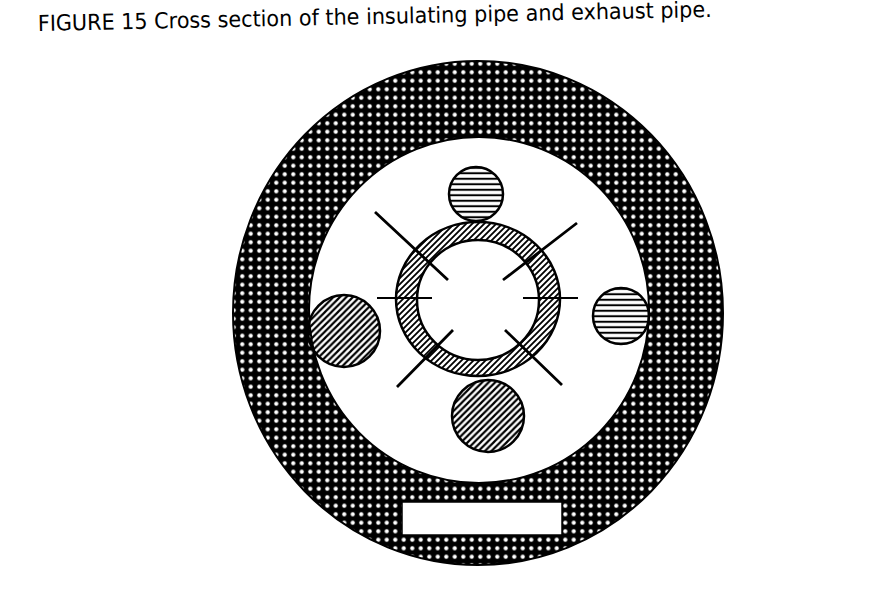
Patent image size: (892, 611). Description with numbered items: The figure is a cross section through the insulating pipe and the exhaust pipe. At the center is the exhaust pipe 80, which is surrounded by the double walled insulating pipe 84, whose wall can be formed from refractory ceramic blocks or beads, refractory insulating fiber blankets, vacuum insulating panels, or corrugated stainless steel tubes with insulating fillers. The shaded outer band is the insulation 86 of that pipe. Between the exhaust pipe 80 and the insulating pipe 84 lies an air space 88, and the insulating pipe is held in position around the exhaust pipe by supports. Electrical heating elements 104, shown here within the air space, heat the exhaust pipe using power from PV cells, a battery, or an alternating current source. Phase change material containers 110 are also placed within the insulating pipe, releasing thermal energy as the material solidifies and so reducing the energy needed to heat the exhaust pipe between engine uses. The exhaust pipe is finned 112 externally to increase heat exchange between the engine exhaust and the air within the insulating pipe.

The exhaust pipe 80 is at (396, 286).
The insulating pipe 84 is at (233, 404).
The insulating pipe (insulation) 86 is at (327, 121).
The air space 88 is at (575, 200).
The electrical heating elements 104 is at (450, 188).
The phase change material containers 110 is at (308, 353).
The fins 112 is at (555, 238).